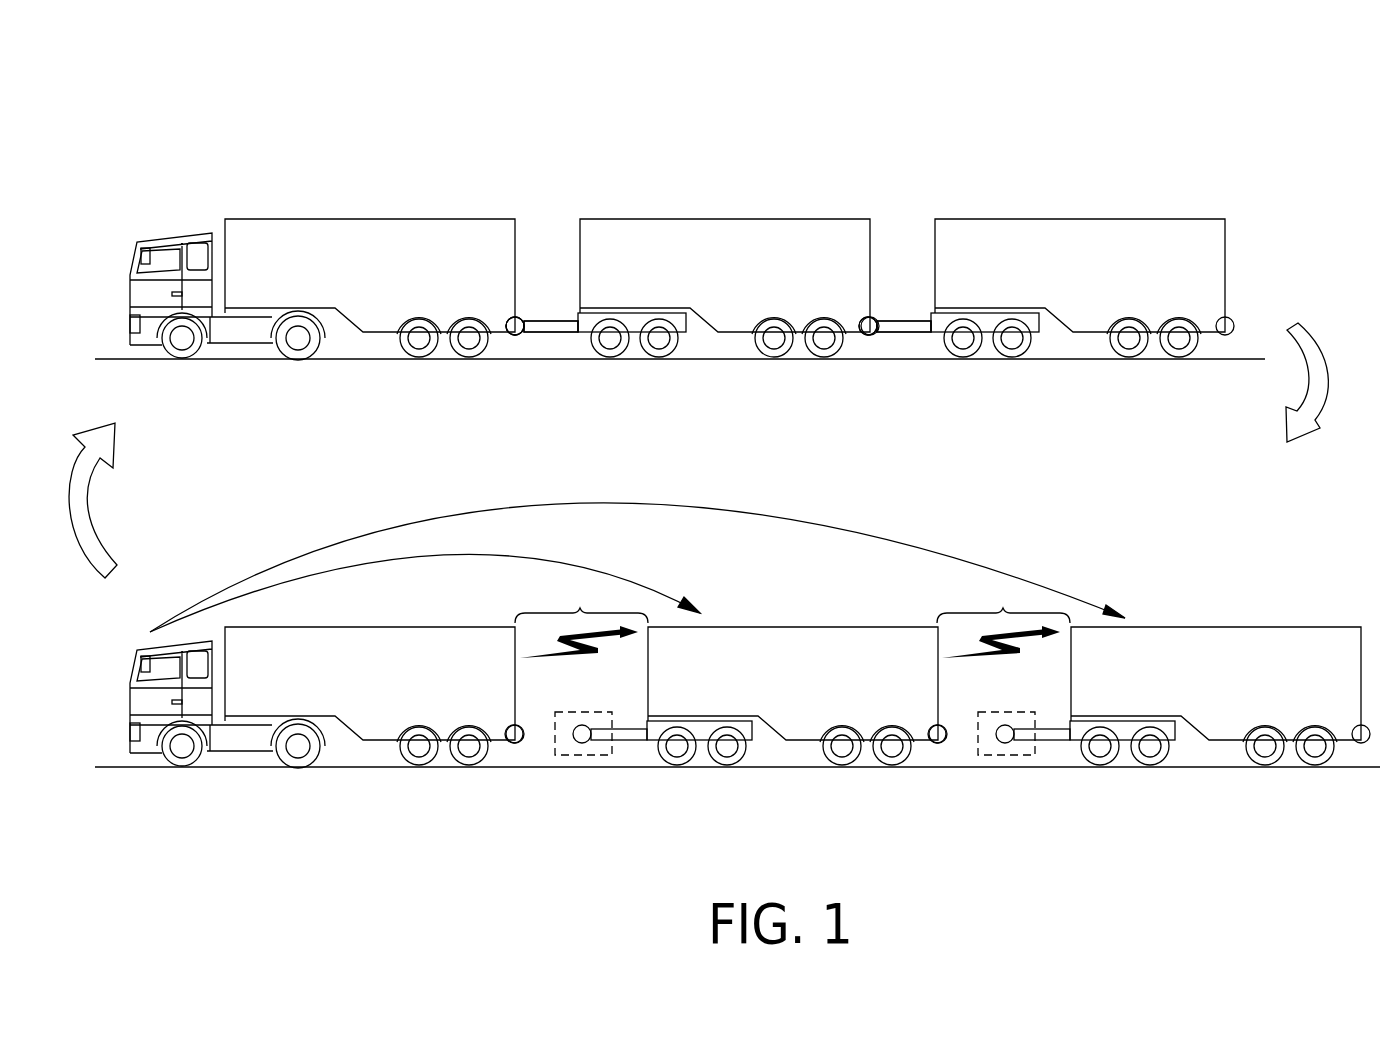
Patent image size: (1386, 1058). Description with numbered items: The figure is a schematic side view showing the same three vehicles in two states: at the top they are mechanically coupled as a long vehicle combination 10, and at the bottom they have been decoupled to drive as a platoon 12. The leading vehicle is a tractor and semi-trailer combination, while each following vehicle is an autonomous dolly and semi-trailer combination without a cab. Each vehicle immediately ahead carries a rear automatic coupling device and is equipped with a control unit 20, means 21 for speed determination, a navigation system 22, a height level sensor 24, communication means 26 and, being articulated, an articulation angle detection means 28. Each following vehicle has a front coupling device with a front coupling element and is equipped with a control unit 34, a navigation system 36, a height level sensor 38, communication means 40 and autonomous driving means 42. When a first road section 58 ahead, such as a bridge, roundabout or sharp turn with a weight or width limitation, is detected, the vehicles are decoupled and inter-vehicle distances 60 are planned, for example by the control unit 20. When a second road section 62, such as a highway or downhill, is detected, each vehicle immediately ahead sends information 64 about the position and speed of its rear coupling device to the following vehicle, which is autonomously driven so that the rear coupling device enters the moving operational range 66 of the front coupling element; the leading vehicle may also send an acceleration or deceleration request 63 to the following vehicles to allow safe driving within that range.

The long vehicle combination 10 is at (1244, 82).
The platoon 12 is at (1275, 858).
The control unit 20 is at (327, 260).
The means for speed determination 21 is at (327, 260).
The navigation system 22 is at (327, 260).
The height level sensor 24 is at (327, 260).
The communication means 26 is at (327, 260).
The articulation angle detection means 28 is at (173, 236).
The control unit 34 is at (848, 259).
The navigation system 36 is at (848, 259).
The height level sensor 38 is at (848, 259).
The communication means 40 is at (848, 259).
The autonomous driving means 42 is at (590, 320).
The first road section 58 is at (338, 769).
The inter-vehicle distance 60 is at (792, 599).
The second road section 62 is at (338, 361).
The acceleration or deceleration request 63 is at (455, 555).
The information 64 is at (606, 632).
The operational range 66 is at (560, 757).